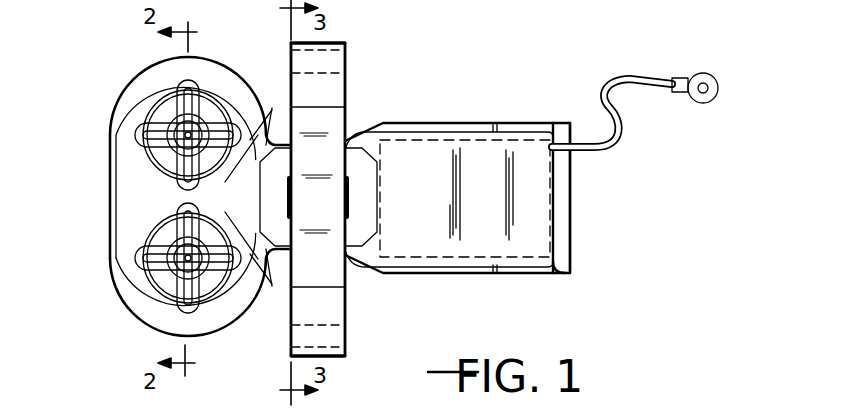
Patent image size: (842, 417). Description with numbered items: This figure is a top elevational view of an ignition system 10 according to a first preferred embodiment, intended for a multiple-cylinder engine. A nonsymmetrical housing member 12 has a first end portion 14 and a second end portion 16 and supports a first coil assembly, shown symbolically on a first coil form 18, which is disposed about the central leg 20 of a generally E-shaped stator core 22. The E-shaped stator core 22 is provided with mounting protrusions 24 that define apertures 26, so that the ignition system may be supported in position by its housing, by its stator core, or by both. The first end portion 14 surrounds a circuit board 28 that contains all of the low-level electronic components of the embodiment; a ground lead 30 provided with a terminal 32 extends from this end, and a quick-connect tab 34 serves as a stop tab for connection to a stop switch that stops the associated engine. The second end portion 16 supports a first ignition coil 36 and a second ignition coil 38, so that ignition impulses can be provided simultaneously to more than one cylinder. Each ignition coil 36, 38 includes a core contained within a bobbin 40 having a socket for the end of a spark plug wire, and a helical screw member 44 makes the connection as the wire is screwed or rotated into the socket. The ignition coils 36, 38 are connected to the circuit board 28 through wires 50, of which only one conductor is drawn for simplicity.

The ignition system 10 is at (412, 90).
The housing member 12 is at (470, 108).
The first end portion 14 is at (540, 123).
The second end portion 16 is at (135, 78).
The first coil form 18 is at (363, 234).
The central leg 20 is at (360, 200).
The E-shaped stator core 22 is at (342, 38).
The mounting protrusions 24 is at (291, 42).
The apertures 26 is at (290, 64).
The circuit board 28 is at (522, 196).
The ground lead 30 is at (623, 142).
The terminal 32 is at (698, 73).
The flange edge 34 is at (540, 262).
The first ignition coil 36 is at (145, 175).
The second ignition coil 38 is at (143, 293).
The bobbin 40 is at (217, 118).
The helical screw member 44 is at (188, 135).
The wires 50 is at (255, 140).